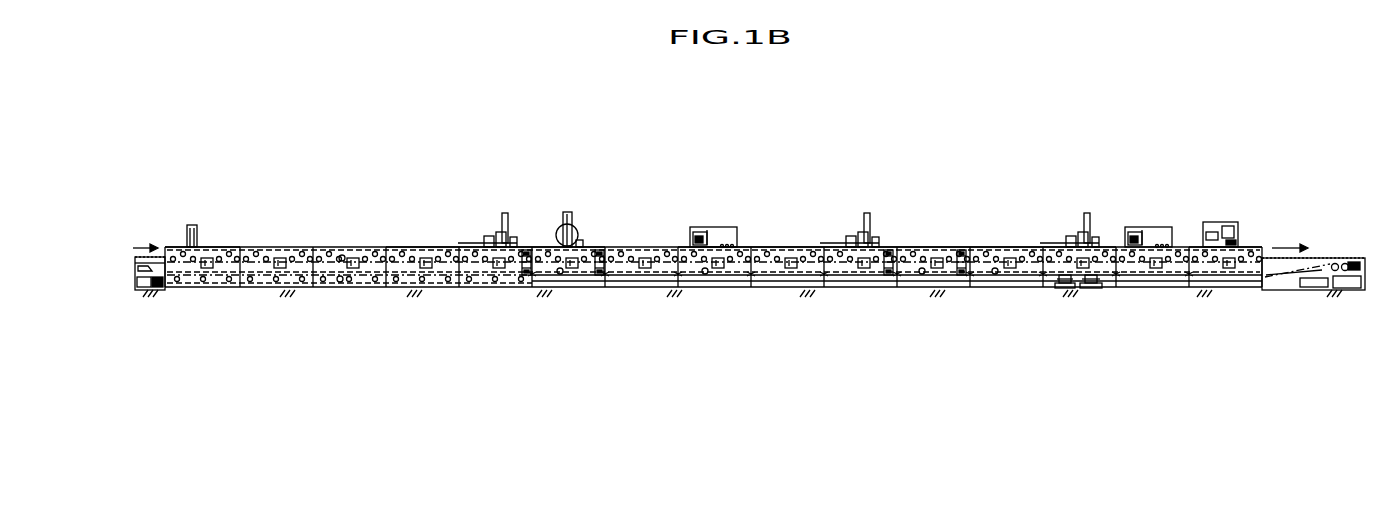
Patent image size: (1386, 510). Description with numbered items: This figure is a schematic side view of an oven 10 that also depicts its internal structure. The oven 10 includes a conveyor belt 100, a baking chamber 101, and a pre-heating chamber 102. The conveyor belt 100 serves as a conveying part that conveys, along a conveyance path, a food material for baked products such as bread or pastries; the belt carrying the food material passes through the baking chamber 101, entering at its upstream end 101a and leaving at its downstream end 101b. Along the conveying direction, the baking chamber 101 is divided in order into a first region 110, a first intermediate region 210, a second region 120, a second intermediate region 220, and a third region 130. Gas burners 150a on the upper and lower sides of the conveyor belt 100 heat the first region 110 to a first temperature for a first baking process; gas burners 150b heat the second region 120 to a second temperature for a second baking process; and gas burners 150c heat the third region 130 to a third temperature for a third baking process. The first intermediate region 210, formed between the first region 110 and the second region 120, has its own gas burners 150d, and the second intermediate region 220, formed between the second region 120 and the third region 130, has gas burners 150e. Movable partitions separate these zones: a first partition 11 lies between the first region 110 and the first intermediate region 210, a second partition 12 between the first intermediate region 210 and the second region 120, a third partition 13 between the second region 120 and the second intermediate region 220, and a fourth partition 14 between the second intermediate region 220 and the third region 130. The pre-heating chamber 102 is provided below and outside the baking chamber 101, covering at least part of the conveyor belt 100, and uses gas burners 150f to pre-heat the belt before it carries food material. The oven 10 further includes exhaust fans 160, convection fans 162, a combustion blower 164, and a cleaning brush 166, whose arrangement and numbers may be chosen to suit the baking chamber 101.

The oven 10 is at (186, 115).
The conveyor belt 100 is at (130, 242).
The baking chamber 101 is at (253, 240).
The upstream end 101a is at (166, 258).
The downstream end 101b is at (1262, 258).
The pre-heating chamber 102 is at (253, 294).
The first region 110 is at (430, 245).
The second region 120 is at (788, 246).
The third region 130 is at (1010, 246).
The first intermediate region 210 is at (547, 246).
The second intermediate region 220 is at (925, 246).
The first partition 11 is at (524, 250).
The second partition 12 is at (600, 250).
The third partition 13 is at (889, 250).
The fourth partition 14 is at (961, 250).
The gas burners 150a is at (342, 255).
The gas burners 150b is at (705, 274).
The gas burners 150c is at (995, 274).
The gas burners 150d is at (560, 274).
The gas burners 150e is at (922, 274).
The gas burners 150f is at (340, 282).
The exhaust fans 160 is at (503, 222).
The convection fans 162 is at (715, 227).
The combustion blower 164 is at (577, 228).
The cleaning brush 166 is at (1085, 290).